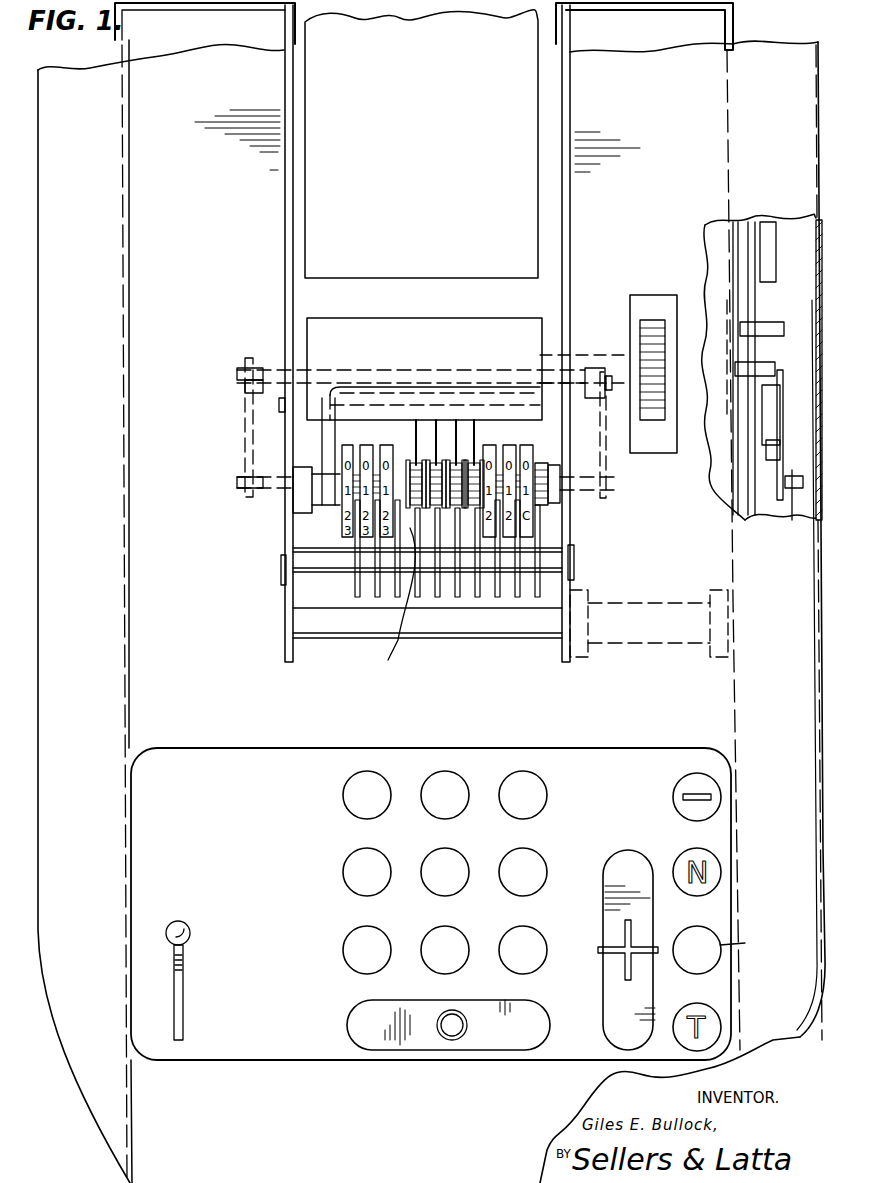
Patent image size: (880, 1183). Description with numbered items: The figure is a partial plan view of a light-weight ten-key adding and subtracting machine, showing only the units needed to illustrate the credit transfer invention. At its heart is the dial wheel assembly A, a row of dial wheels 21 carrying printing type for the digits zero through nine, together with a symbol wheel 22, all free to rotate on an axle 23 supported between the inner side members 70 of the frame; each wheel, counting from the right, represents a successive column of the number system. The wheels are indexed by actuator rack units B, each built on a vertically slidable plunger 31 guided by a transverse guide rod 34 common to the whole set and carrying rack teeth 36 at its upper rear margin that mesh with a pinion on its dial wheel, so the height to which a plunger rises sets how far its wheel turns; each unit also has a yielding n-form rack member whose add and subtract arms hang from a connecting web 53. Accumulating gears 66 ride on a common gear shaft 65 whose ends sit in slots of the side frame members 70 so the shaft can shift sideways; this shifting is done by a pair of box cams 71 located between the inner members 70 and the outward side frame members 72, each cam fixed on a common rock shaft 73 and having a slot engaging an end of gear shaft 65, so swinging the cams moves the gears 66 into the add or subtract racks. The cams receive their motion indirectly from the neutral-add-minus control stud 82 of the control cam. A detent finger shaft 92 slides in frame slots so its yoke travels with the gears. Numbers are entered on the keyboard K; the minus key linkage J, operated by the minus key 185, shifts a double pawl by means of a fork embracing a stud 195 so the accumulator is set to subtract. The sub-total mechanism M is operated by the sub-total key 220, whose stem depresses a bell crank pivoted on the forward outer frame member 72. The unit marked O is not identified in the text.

The inner side frame members 70 is at (285, 246).
The outward side frame members 72 is at (123, 347).
The common rock shaft 73 is at (320, 372).
The connecting web 53 is at (400, 430).
The box cams 71 is at (245, 404).
The shaft 92 is at (280, 422).
The axle 23 is at (300, 500).
The gears 66 is at (412, 490).
The dial wheel assembly A is at (318, 524).
The dial wheels 21 is at (318, 535).
The plunger 31 is at (355, 582).
The actuator rack units B is at (370, 662).
The neutral-add-minus control stud 82 is at (765, 305).
The rack teeth 36 is at (540, 505).
The common gear shaft 65 is at (612, 492).
The transverse guide rod 34 is at (552, 556).
The symbol wheel 22 is at (530, 548).
The stud 195 is at (748, 478).
The printing unit housing O is at (447, 318).
The keyboard K is at (338, 968).
The minus key 185 is at (692, 779).
The minus key linkage J is at (722, 791).
The sub-total key 220 is at (715, 930).
The sub-total mechanism M is at (745, 943).